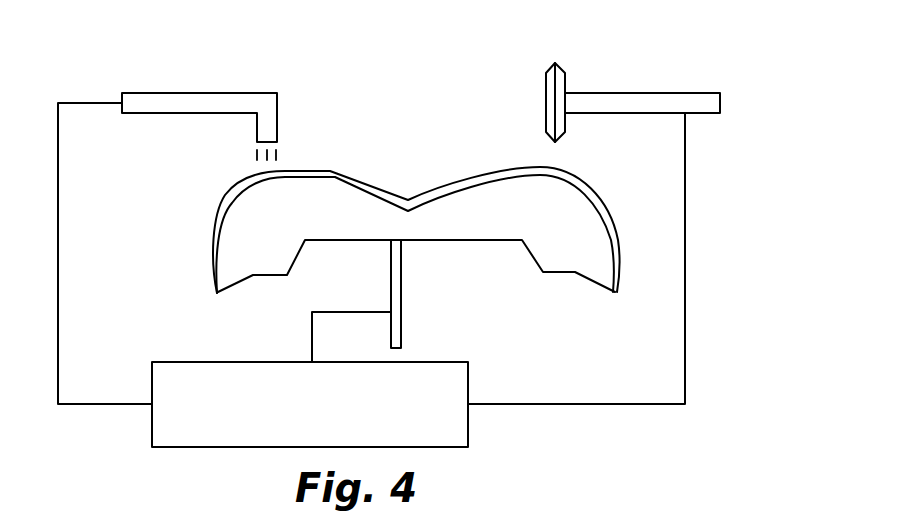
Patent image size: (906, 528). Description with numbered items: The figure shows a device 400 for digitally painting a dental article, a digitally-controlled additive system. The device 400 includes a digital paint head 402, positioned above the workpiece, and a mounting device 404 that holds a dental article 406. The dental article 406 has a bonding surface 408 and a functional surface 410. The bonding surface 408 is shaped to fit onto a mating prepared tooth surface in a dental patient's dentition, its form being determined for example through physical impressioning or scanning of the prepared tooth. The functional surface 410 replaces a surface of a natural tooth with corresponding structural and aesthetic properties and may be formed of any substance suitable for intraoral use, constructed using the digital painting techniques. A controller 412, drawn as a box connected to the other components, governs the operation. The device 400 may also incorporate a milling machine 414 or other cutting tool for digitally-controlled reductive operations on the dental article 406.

The device 400 is at (664, 35).
The digital paint head 402 is at (195, 92).
The mounting device 404 is at (403, 288).
The dental article 406 is at (302, 229).
The bonding surface 408 is at (238, 285).
The functional surface 410 is at (228, 185).
The controller 412 is at (337, 416).
The milling machine 414 is at (613, 92).